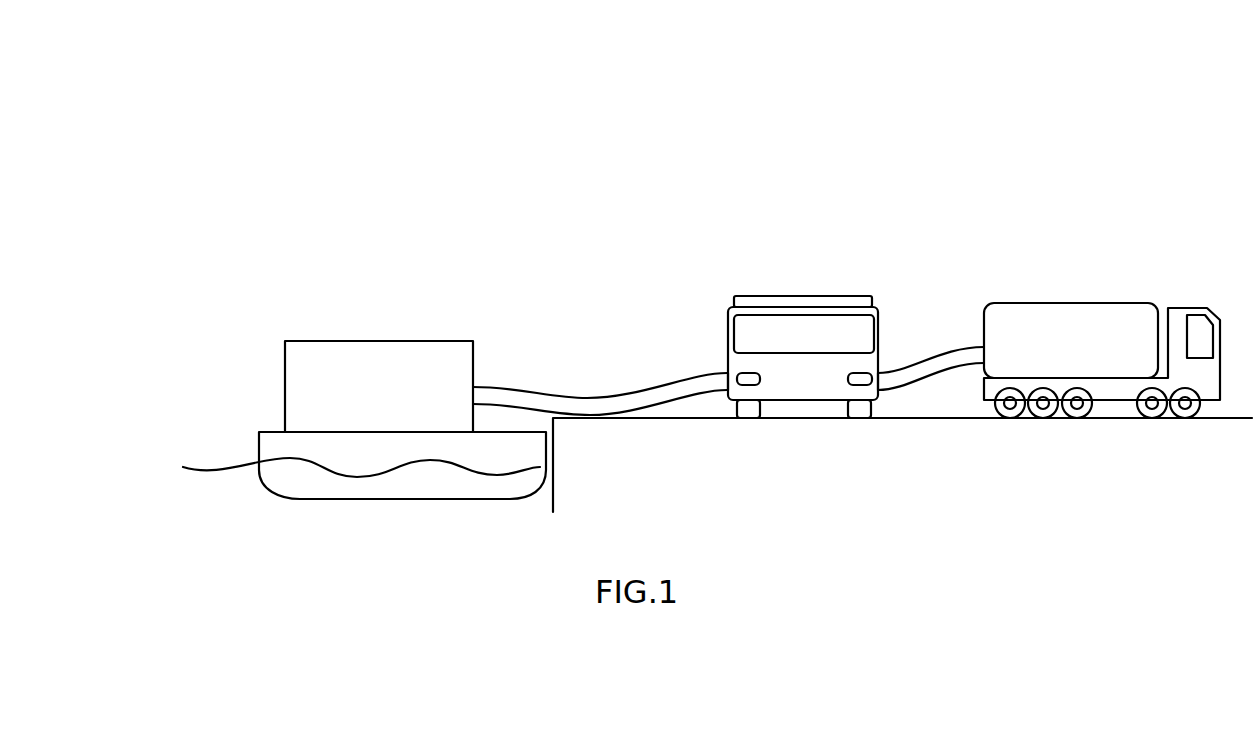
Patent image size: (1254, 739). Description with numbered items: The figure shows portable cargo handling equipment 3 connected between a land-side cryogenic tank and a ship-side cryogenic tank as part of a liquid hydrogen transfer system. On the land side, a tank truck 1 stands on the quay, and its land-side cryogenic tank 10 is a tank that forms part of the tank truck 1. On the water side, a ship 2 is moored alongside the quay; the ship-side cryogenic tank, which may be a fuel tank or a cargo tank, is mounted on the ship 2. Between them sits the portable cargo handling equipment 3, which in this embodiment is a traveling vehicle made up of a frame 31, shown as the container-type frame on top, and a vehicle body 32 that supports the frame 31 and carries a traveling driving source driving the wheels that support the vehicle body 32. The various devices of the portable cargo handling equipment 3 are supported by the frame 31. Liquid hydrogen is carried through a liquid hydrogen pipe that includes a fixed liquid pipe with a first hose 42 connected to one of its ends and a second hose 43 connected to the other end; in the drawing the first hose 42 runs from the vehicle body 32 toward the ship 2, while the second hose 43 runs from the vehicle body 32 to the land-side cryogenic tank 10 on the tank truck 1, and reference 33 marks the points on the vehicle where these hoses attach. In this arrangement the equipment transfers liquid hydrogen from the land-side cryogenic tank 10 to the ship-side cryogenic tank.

The tank truck 1 is at (1119, 322).
The ship 2 is at (292, 304).
The portable cargo handling equipment 3 is at (791, 277).
The land-side cryogenic tank 10 is at (1070, 303).
The frame 31 is at (758, 295).
The vehicle body 32 is at (878, 312).
The connection port 33 is at (732, 406).
The first hose 42 is at (570, 398).
The second hose 43 is at (948, 347).